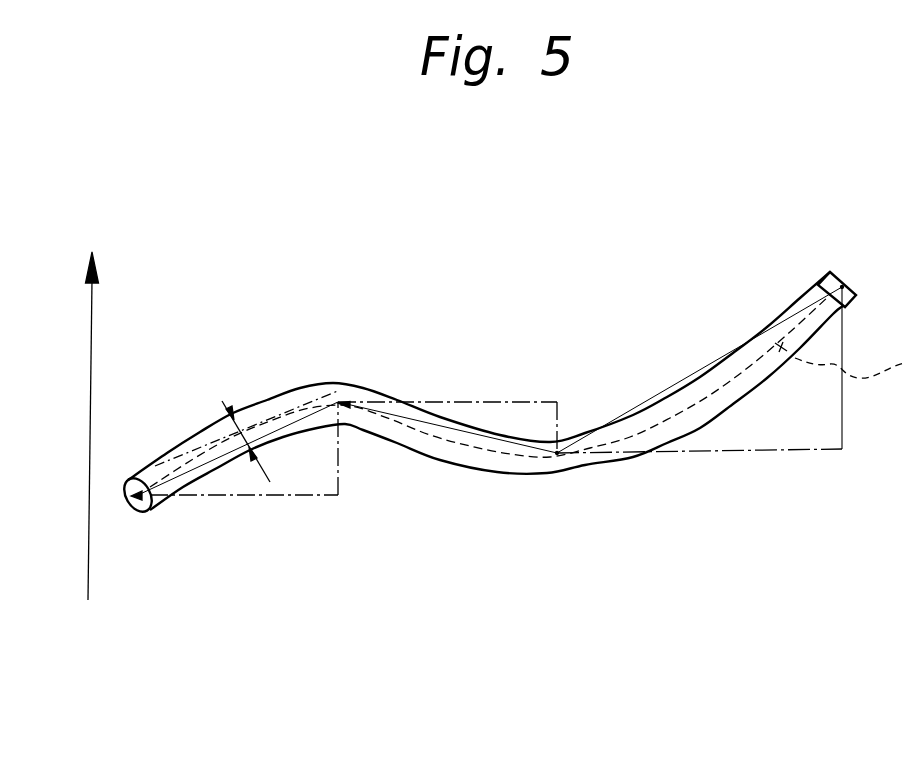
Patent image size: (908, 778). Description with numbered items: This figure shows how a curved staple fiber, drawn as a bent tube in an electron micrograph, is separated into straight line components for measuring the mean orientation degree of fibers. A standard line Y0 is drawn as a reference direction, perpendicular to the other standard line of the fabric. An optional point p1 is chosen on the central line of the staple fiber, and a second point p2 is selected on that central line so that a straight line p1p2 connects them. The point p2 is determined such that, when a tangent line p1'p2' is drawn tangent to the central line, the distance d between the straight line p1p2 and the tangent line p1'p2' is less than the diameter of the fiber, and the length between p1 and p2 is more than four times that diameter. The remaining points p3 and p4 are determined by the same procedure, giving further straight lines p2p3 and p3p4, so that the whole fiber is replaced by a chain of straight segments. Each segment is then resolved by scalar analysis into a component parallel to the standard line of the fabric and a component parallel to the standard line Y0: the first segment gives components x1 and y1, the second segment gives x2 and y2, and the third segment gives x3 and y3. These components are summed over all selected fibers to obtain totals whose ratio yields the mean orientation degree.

The standard line Y0 is at (85, 412).
The optional point on central line p1 is at (134, 521).
The point on central line p2 is at (340, 401).
The point on central line p3 is at (557, 454).
The point on central line p4 is at (842, 287).
The straight line P1P2 p1p2 is at (197, 470).
The tangent line P1'P2' p1'p2' is at (247, 373).
The straight line P2P3 p2p3 is at (523, 443).
The straight line P3P4 p3p4 is at (703, 370).
The X component x1 is at (244, 509).
The Y component y1 is at (355, 448).
The X component x2 is at (447, 388).
The Y component y2 is at (572, 426).
The X component x3 is at (699, 463).
The Y component y3 is at (857, 368).
The distance d is at (255, 430).